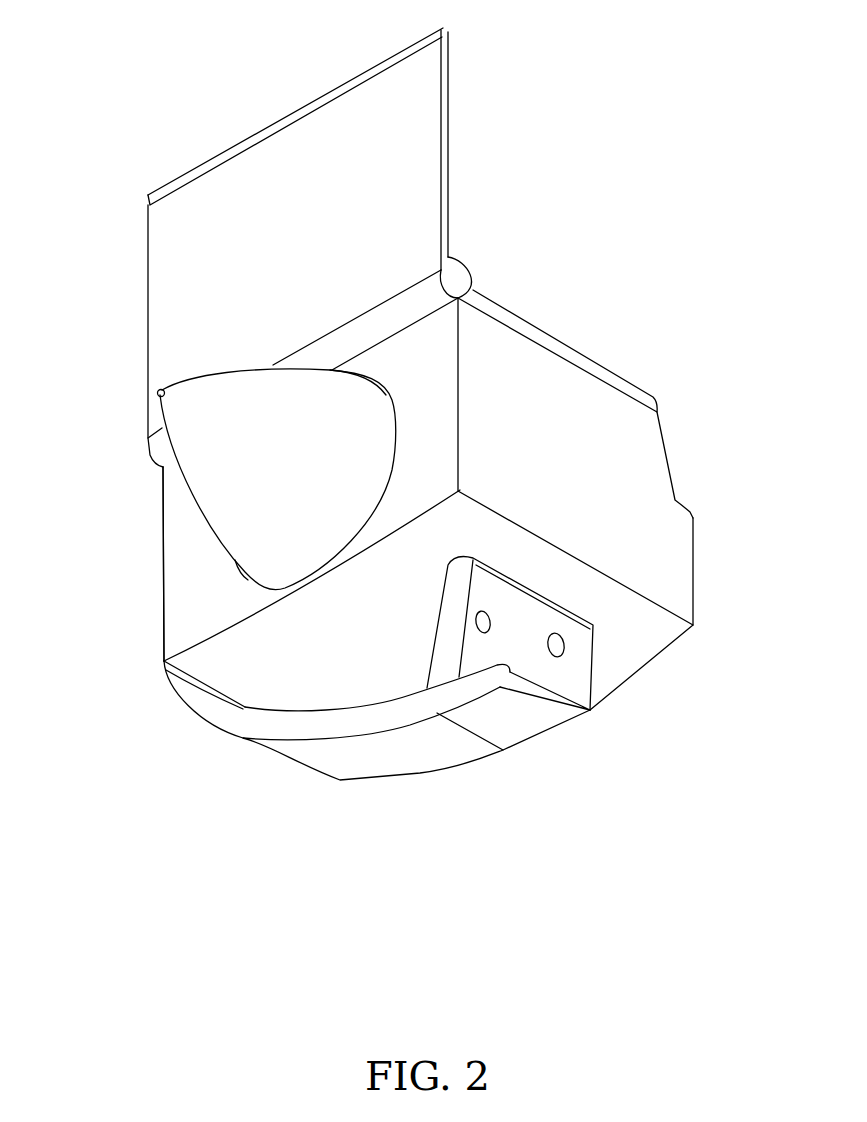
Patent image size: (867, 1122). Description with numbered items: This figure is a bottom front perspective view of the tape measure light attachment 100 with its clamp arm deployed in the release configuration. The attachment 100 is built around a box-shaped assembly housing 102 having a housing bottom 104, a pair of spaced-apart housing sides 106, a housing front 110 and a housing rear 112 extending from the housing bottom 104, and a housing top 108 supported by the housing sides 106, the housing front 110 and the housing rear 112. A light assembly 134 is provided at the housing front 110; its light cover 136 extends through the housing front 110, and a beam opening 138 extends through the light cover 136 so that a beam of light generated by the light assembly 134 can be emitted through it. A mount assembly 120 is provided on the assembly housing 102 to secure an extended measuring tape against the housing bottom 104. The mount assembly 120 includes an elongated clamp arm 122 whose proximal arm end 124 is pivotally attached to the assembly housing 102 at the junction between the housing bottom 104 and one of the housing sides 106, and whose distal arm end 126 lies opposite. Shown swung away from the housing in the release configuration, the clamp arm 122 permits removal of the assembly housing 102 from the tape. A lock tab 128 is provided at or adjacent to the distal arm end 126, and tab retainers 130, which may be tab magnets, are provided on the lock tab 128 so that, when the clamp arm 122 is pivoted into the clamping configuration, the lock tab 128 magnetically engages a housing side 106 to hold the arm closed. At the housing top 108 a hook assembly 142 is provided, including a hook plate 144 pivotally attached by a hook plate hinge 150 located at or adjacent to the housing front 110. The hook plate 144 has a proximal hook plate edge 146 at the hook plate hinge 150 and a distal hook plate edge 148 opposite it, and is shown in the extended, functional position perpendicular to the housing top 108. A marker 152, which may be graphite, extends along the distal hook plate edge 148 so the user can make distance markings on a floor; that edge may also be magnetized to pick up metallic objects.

The tape measure light attachment 100 is at (148, 110).
The assembly housing 102 is at (159, 521).
The housing bottom 104 is at (620, 637).
The housing sides 106 is at (598, 462).
The housing top 108 is at (610, 376).
The housing front 110 is at (190, 625).
The housing rear 112 is at (695, 564).
The mount assembly 120 is at (488, 770).
The clamp arm 122 is at (393, 765).
The proximal arm end 124 is at (213, 687).
The distal arm end 126 is at (573, 710).
The lock tab 128 is at (457, 580).
The tab retainer 130 is at (487, 618).
The light assembly 134 is at (190, 500).
The light cover 136 is at (245, 390).
The beam opening 138 is at (157, 392).
The hook assembly 142 is at (143, 210).
The hook plate 144 is at (145, 271).
The proximal hook plate edge 146 is at (390, 298).
The distal hook plate edge 148 is at (390, 58).
The hook plate hinge 150 is at (458, 276).
The marker 152 is at (300, 108).